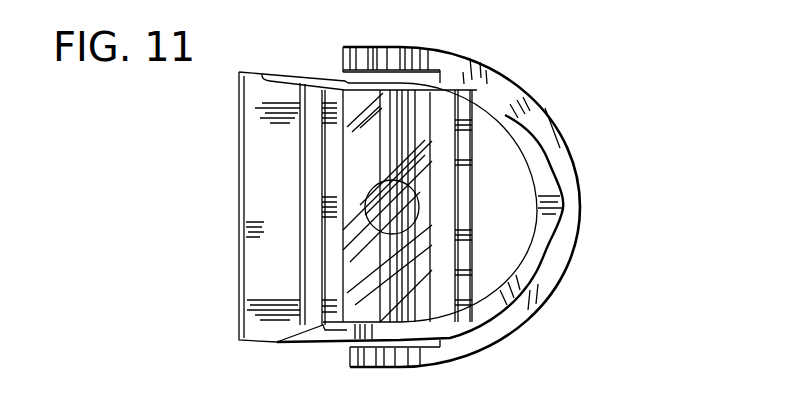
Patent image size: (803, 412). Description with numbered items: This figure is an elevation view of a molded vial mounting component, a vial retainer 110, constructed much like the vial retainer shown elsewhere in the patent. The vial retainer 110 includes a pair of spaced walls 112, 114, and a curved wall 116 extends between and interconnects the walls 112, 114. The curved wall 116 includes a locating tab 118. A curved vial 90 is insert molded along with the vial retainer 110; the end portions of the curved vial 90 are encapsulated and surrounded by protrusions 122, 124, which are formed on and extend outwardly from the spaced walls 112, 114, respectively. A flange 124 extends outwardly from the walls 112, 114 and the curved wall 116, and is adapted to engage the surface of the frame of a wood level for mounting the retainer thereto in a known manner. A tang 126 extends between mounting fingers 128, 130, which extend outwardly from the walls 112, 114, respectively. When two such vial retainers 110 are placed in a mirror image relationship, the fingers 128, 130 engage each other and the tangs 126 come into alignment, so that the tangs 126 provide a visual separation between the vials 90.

The vial retainer 110 is at (563, 92).
The spaced wall 112 is at (362, 86).
The spaced wall 114 is at (382, 336).
The curved wall 116 is at (540, 141).
The locating tab 118 is at (563, 205).
The protrusion 122 is at (378, 67).
The protrusion / flange 124 is at (390, 347).
The tang 126 is at (267, 190).
The mounting finger 128 is at (283, 82).
The mounting finger 130 is at (320, 336).
The curved vial 90 is at (440, 293).